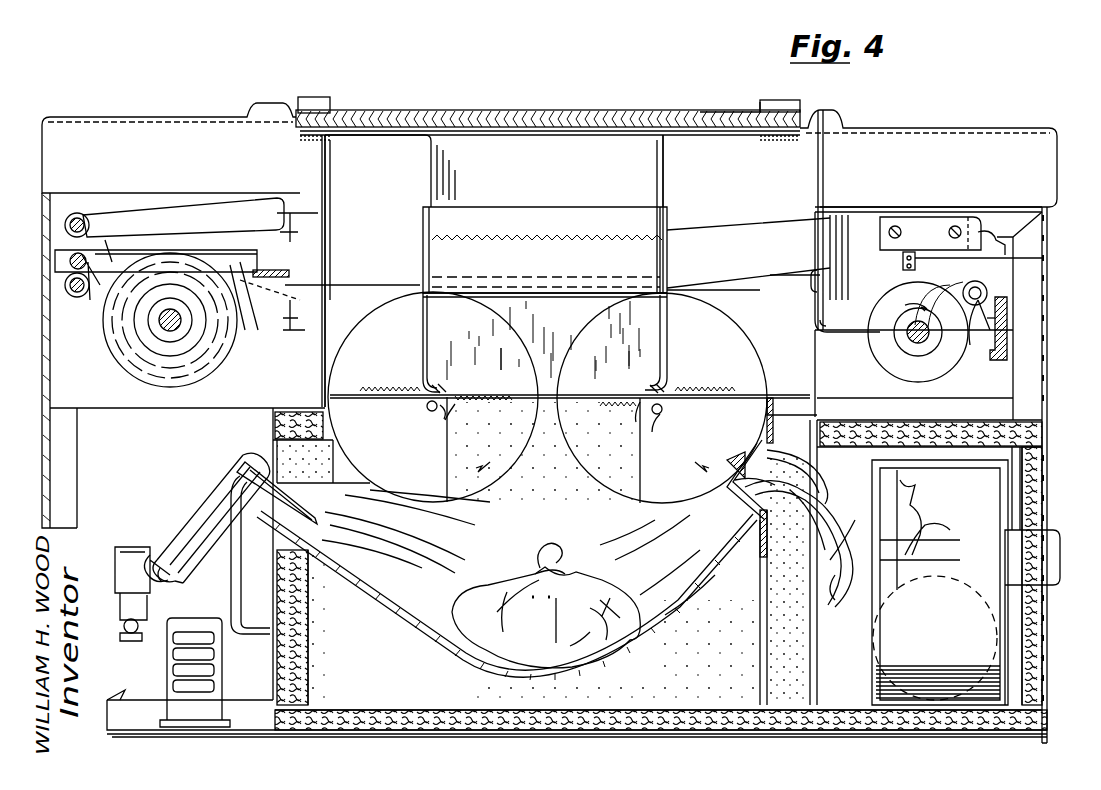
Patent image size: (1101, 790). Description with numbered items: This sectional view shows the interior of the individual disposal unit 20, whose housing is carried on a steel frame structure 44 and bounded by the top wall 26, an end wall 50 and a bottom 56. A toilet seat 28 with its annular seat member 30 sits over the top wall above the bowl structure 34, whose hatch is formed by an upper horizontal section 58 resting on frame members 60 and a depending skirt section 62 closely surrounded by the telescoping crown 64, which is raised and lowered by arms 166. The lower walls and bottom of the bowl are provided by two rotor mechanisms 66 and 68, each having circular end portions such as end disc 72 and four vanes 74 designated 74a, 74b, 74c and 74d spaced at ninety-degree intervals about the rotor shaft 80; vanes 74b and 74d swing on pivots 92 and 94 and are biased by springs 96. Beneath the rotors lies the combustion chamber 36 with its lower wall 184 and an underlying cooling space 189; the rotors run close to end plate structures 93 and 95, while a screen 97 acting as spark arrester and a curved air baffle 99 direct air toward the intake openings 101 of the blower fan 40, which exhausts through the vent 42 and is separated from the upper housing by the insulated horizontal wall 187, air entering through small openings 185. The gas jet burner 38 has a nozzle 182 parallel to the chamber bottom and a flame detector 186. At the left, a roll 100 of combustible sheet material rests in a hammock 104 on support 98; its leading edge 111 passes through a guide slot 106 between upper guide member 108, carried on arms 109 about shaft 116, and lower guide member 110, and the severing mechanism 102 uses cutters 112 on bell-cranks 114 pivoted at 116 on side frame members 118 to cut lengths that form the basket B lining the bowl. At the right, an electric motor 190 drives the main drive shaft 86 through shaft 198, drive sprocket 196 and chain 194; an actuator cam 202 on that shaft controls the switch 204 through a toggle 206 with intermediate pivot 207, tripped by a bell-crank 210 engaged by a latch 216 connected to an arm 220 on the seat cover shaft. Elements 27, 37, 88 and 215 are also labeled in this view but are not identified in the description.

The disposal unit 20 is at (954, 120).
The top wall 26 is at (204, 117).
The insulation wall 27 is at (1042, 426).
The toilet seat 28 is at (498, 109).
The annular seat member 30 is at (710, 112).
The bowl structure 34 is at (580, 191).
The combustion chamber 36 is at (521, 524).
The top plate 37 is at (640, 110).
The gas jet burner 38 is at (316, 502).
The blower fan 40 is at (968, 549).
The opening (vent) 42 is at (978, 592).
The frame structure 44 is at (1035, 405).
The end wall 50 is at (1046, 234).
The bottom 56 is at (666, 738).
The upper horizontal section 58 is at (382, 150).
The frame members 60 is at (319, 145).
The depending skirt section 62 is at (665, 178).
The crown 64 is at (672, 226).
The rotor mechanism 66 is at (723, 363).
The rotor mechanism 68 is at (393, 341).
The circular end portion 72 is at (715, 322).
The vanes 74 is at (546, 150).
The vane 74a is at (346, 406).
The vane 74b is at (420, 370).
The vane 74c is at (518, 402).
The vane 74d is at (543, 478).
The rotor shaft 80 is at (426, 406).
The main drive shaft 86 is at (925, 340).
The nip 88 is at (448, 392).
The pivot 92 is at (440, 378).
The end plate structure 93 is at (808, 397).
The pivot 94 is at (438, 414).
The end plate structure 95 is at (816, 415).
The springs 96 is at (470, 400).
The screen 97 is at (732, 468).
The support 98 is at (196, 396).
The air baffle plate 99 is at (818, 478).
The roll 100 is at (210, 366).
The intake openings 101 is at (843, 596).
The severing mechanism 102 is at (190, 214).
The hammock 104 is at (109, 337).
The guide slot 106 is at (300, 275).
The upper guide member 108 is at (300, 260).
The arms 109 is at (223, 254).
The lower guide member 110 is at (286, 277).
The leading edge 111 is at (384, 300).
The cutters 112 is at (300, 232).
The bell-cranks 114 is at (105, 215).
The pivot (supporting shaft) 116 is at (66, 263).
The side frame members 118 is at (55, 244).
The arms 166 is at (733, 250).
The nozzle 182 is at (282, 545).
The lower wall 184 is at (360, 601).
The openings 185 is at (1044, 290).
The flame detector 186 is at (254, 520).
The insulated horizontal wall 187 is at (988, 420).
The space 189 is at (425, 685).
The electric motor 190 is at (706, 286).
The chain 194 is at (972, 343).
The drive sprocket 196 is at (990, 296).
The shaft 198 is at (988, 285).
The actuator cam 202 is at (885, 345).
The electrical switch 204 is at (962, 214).
The toggle 206 is at (990, 256).
The intermediate pivot 207 is at (908, 250).
The bell-crank 210 is at (830, 302).
The link 215 is at (830, 224).
The latch 216 is at (824, 198).
The arm 220 is at (824, 156).
The basket B is at (546, 605).